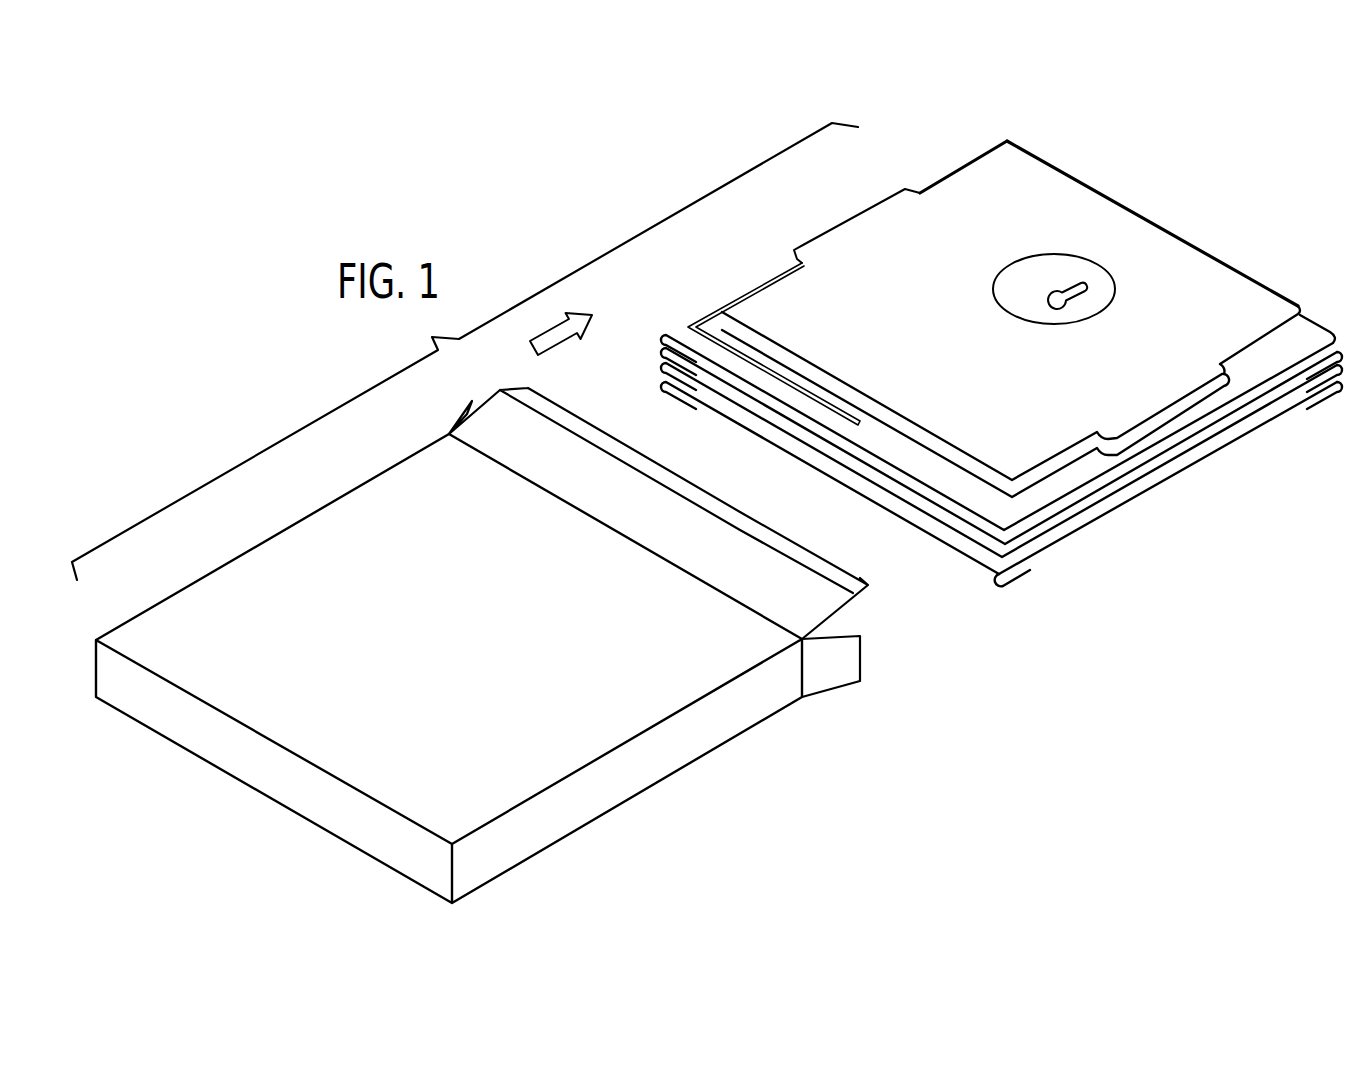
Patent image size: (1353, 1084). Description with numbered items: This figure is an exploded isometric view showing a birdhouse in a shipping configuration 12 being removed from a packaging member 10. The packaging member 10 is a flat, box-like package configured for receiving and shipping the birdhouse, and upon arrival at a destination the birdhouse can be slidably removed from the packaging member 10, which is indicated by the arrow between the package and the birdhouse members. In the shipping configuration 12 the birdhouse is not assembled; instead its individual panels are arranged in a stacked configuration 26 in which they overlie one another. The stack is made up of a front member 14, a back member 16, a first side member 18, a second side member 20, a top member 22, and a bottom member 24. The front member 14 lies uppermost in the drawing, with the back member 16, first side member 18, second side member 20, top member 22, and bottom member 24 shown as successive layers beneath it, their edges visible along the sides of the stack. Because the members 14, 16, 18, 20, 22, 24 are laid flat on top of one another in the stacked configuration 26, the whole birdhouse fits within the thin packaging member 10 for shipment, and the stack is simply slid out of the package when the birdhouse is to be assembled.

The packaging member 10 is at (247, 553).
The shipping configuration 12 is at (987, 141).
The front member 14 is at (1073, 183).
The back member 16 is at (1296, 329).
The first side member 18 is at (1283, 357).
The second side member 20 is at (1177, 442).
The top member 22 is at (1022, 542).
The bottom member 24 is at (985, 560).
The stacked configuration 26 is at (1223, 239).